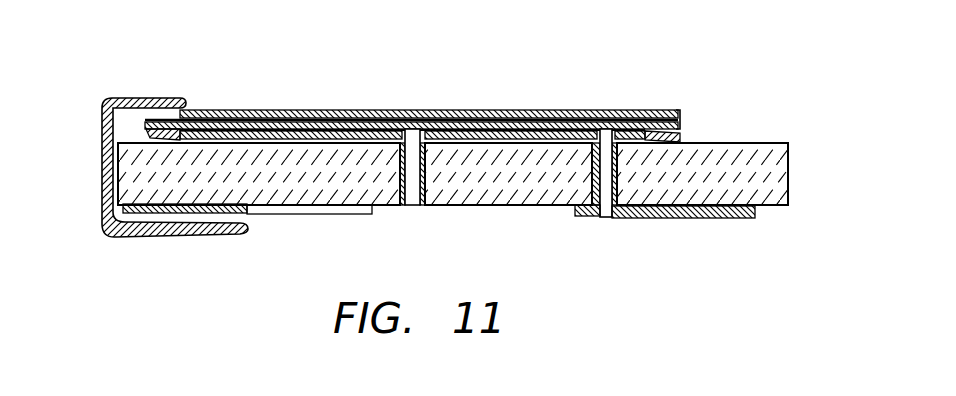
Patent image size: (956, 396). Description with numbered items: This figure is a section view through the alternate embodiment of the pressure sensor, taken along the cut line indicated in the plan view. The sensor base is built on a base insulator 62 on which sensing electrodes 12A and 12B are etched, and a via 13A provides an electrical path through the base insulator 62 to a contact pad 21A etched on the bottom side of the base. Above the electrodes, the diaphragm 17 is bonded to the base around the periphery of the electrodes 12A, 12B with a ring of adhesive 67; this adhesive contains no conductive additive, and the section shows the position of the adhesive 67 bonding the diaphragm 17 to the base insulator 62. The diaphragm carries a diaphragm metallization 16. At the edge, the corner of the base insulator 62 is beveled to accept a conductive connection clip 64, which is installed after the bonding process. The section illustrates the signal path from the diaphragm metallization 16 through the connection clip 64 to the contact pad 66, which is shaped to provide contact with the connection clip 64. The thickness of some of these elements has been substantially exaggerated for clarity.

The conductive connection clip 64 is at (164, 97).
The diaphragm metallization 16 is at (640, 110).
The diaphragm 17 is at (681, 125).
The ring of adhesive 67 is at (680, 140).
The contact pad 66 is at (310, 215).
The sensing electrode 12B is at (380, 133).
The sensing electrode 12A is at (480, 133).
The via 13A is at (602, 219).
The contact pad 21A is at (707, 219).
The base insulator 62 is at (789, 183).